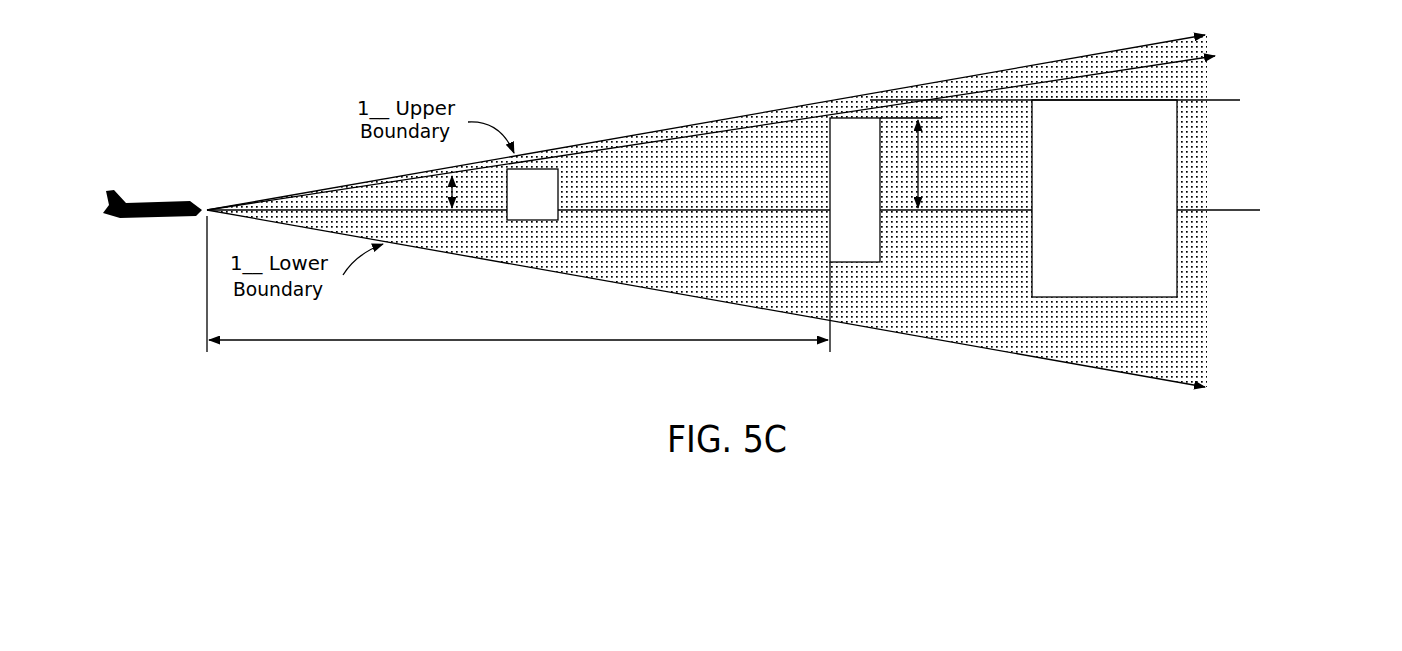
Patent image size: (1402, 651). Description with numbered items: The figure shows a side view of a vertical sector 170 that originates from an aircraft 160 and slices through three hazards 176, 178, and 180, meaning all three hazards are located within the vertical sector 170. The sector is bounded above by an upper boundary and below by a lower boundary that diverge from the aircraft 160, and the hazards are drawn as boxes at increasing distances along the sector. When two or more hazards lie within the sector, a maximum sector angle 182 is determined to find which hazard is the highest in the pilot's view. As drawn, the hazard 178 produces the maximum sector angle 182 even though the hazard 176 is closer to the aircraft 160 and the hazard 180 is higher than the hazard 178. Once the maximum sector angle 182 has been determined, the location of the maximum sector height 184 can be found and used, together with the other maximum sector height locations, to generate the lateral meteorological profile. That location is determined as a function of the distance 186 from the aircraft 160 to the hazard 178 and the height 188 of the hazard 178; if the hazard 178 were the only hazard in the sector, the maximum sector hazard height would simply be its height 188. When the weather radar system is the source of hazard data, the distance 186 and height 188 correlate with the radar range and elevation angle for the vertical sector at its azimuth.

The aircraft 160 is at (153, 191).
The vertical sector 170 is at (1216, 262).
The hazard 176 is at (532, 194).
The hazard 178 is at (855, 190).
The hazard 180 is at (1104, 198).
The maximum sector angle 182 is at (463, 198).
The location of the maximum sector height 184 is at (815, 107).
The distance 186 is at (518, 296).
The height 188 is at (937, 163).